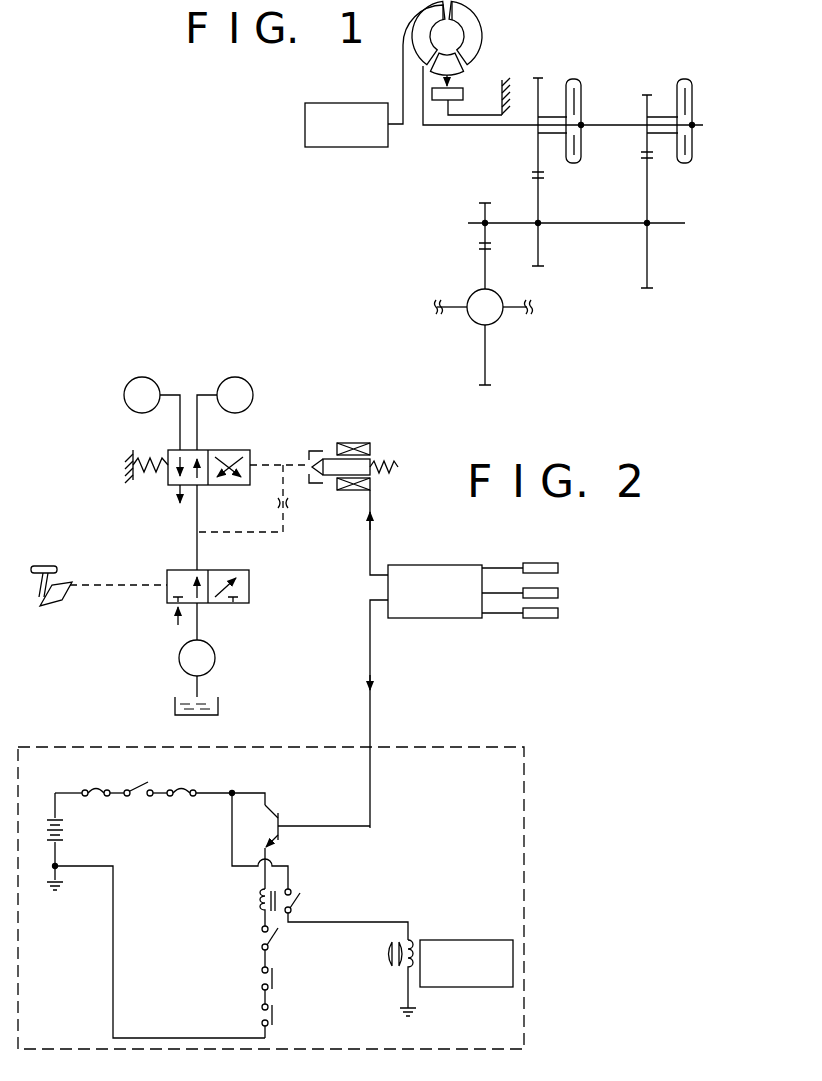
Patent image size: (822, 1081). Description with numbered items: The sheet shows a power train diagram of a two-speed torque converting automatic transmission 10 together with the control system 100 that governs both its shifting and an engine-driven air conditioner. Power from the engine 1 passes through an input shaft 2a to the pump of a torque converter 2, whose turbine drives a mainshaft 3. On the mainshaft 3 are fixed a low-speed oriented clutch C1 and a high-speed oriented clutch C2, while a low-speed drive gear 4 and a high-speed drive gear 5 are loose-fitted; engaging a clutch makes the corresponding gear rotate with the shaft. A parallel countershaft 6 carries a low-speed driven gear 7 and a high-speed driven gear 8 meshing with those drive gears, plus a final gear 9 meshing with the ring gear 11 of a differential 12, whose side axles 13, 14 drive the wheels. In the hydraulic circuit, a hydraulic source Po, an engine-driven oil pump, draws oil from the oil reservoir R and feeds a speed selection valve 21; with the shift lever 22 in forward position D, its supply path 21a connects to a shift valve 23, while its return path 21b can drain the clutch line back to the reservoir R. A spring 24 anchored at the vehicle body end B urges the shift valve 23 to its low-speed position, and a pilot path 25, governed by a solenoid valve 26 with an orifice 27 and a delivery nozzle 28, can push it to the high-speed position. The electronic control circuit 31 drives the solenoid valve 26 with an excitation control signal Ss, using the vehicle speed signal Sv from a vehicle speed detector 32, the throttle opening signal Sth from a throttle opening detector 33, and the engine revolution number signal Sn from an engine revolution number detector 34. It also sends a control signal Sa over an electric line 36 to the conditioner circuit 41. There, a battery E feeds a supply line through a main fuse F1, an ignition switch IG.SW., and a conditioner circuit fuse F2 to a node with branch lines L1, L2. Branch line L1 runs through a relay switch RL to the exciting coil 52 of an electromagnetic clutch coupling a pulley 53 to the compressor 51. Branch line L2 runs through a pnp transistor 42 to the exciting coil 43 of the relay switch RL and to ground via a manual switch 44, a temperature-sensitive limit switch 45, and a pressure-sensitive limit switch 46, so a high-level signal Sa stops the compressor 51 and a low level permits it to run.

In FIG. 1, the engine 1 is at (305, 121).
In FIG. 1, the torque converter 2 is at (486, 24).
In FIG. 1, the input shaft of torque converter 2a is at (403, 114).
In FIG. 1, the mainshaft 3 is at (522, 127).
In FIG. 1, the low-speed drive gear 4 is at (647, 95).
In FIG. 1, the high-speed drive gear 5 is at (538, 78).
In FIG. 1, the countershaft 6 is at (598, 222).
In FIG. 1, the low-speed driven gear 7 is at (647, 288).
In FIG. 1, the high-speed driven gear 8 is at (538, 266).
In FIG. 1, the final gear 9 is at (485, 203).
In FIG. 1, the automatic transmission 10 is at (407, 211).
In FIG. 2, the automatic transmission 10 is at (272, 405).
In FIG. 1, the ring gear 11 is at (485, 385).
In FIG. 1, the differential 12 is at (473, 296).
In FIG. 1, the side axle 13 is at (452, 311).
In FIG. 1, the side axle 14 is at (519, 310).
In FIG. 2, the speed selection valve 21 is at (250, 592).
In FIG. 2, the supply path 21a is at (178, 570).
In FIG. 2, the return path 21b is at (249, 572).
In FIG. 2, the shift lever 22 is at (36, 566).
In FIG. 2, the shift valve 23 is at (242, 486).
In FIG. 2, the spring 24 is at (150, 480).
In FIG. 2, the pilot path 25 is at (276, 464).
In FIG. 2, the solenoid valve 26 is at (400, 468).
In FIG. 2, the orifice 27 is at (290, 505).
In FIG. 2, the delivery nozzle 28 is at (313, 452).
In FIG. 2, the electronic control circuit 31 is at (435, 620).
In FIG. 2, the vehicle speed detector 32 is at (535, 563).
In FIG. 2, the throttle opening detector 33 is at (545, 587).
In FIG. 2, the engine revolution number detector 34 is at (545, 618).
In FIG. 2, the electric line 36 is at (372, 725).
In FIG. 2, the conditioner circuit 41 is at (480, 747).
In FIG. 2, the pnp transistor 42 is at (282, 808).
In FIG. 2, the exciting coil 43 is at (258, 903).
In FIG. 2, the manual switch 44 is at (258, 941).
In FIG. 2, the temperature-sensitive limit switch 45 is at (258, 978).
In FIG. 2, the pressure-sensitive limit switch 46 is at (258, 1015).
In FIG. 2, the compressor 51 is at (470, 940).
In FIG. 2, the exciting coil 52 is at (410, 940).
In FIG. 2, the pulley 53 is at (388, 960).
In FIG. 2, the control system 100 is at (595, 736).
In FIG. 1, the low-speed oriented clutch C1 is at (700, 96).
In FIG. 2, the low-speed oriented clutch C1 is at (225, 413).
In FIG. 1, the high-speed oriented clutch C2 is at (590, 98).
In FIG. 2, the high-speed oriented clutch C2 is at (152, 413).
In FIG. 2, the vehicle body end B is at (133, 453).
In FIG. 2, the forward position D is at (38, 594).
In FIG. 2, the oil reservoir R is at (172, 628).
In FIG. 2, the hydraulic source Po is at (218, 701).
In FIG. 2, the excitation control signal Ss is at (372, 545).
In FIG. 2, the control signal Sa is at (370, 646).
In FIG. 2, the vehicle speed signal Sv is at (500, 565).
In FIG. 2, the throttle opening signal Sth is at (495, 600).
In FIG. 2, the engine revolution number signal Sn is at (510, 615).
In FIG. 2, the battery E is at (47, 830).
In FIG. 2, the main fuse F1 is at (89, 790).
In FIG. 2, the conditioner circuit fuse F2 is at (185, 790).
In FIG. 2, the ignition switch IG.SW. is at (141, 797).
In FIG. 2, the branch line L1 is at (230, 830).
In FIG. 2, the branch line L2 is at (250, 791).
In FIG. 2, the relay switch RL is at (306, 906).